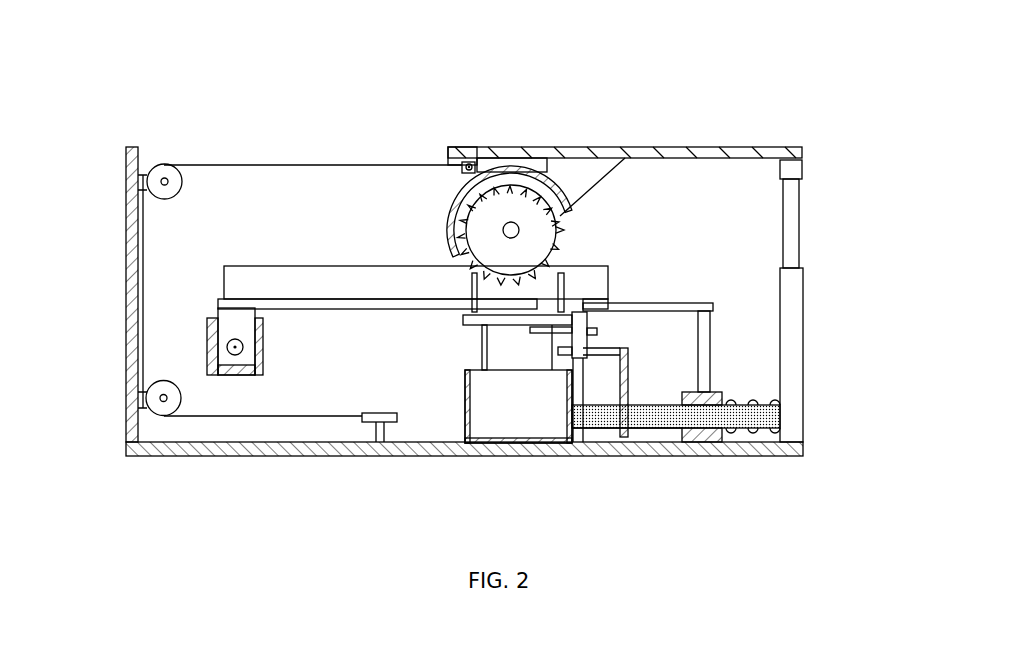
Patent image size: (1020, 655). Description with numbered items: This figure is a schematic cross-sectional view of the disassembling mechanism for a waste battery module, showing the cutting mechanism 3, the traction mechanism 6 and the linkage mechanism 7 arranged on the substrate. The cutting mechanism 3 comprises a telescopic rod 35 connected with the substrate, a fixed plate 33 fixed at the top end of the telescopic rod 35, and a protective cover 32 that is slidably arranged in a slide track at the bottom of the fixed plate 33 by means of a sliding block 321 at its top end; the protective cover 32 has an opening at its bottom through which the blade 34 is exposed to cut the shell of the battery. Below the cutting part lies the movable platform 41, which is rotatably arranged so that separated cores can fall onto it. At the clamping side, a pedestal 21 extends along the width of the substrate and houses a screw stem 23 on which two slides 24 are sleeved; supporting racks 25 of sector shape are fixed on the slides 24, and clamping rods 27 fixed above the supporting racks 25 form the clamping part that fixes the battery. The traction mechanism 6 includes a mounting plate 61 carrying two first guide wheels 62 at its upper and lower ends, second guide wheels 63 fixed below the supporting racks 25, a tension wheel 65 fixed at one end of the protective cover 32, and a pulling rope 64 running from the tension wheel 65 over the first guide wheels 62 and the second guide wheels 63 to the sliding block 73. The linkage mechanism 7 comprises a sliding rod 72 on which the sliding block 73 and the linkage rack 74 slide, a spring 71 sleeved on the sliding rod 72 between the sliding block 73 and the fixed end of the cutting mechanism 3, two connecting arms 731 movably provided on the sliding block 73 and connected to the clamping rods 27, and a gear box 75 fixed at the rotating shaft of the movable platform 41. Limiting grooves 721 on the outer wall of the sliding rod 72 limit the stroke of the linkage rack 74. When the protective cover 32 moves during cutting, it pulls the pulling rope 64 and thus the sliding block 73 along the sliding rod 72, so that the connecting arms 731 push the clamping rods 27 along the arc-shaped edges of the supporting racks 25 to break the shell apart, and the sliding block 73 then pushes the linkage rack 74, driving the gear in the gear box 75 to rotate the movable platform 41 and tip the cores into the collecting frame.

The cutting mechanism 3 is at (877, 87).
The traction mechanism 6 is at (428, 85).
The linkage mechanism 7 is at (900, 193).
The pedestal 21 is at (213, 368).
The screw stem 23 is at (225, 358).
The slide 24 is at (235, 347).
The supporting rack 25 is at (373, 308).
The clamping rod 27 is at (423, 283).
The protective cover 32 is at (503, 168).
The sliding block 321 is at (543, 165).
The fixed plate 33 is at (728, 155).
The blade 34 is at (541, 237).
The telescopic rod 35 is at (788, 203).
The movable platform 41 is at (508, 319).
The mounting plate 61 is at (133, 157).
The first guide wheel 62 is at (162, 392).
The second guide wheel 63 is at (367, 417).
The pulling rope 64 is at (399, 164).
The tension wheel 65 is at (468, 163).
The spring 71 is at (742, 436).
The sliding rod 72 is at (757, 418).
The limiting groove 721 is at (597, 427).
The sliding block 73 is at (717, 400).
The connecting arm 731 is at (688, 310).
The linkage rack 74 is at (628, 377).
The gear box 75 is at (586, 317).